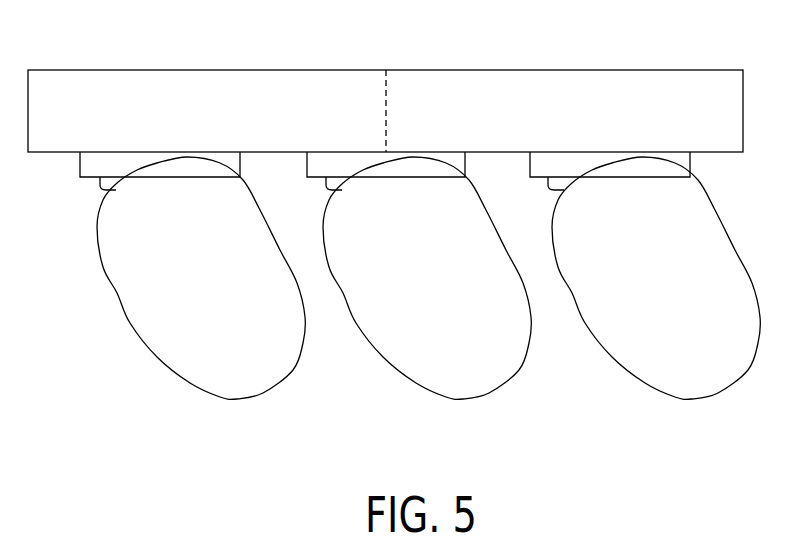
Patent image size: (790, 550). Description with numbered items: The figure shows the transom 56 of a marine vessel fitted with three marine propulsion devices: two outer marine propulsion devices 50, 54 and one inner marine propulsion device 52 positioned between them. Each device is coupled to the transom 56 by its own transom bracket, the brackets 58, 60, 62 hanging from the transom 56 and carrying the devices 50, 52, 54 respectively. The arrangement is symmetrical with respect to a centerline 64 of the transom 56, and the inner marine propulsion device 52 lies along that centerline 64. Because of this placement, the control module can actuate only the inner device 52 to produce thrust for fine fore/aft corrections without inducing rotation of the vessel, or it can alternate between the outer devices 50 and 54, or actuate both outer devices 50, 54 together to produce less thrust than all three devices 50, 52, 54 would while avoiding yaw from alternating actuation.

The outer marine propulsion device 50 is at (192, 384).
The inner marine propulsion device 52 is at (433, 395).
The outer marine propulsion device 54 is at (652, 388).
The transom 56 is at (551, 70).
The transom bracket 58 is at (113, 163).
The transom bracket 60 is at (320, 163).
The transom bracket 62 is at (558, 163).
The centerline 64 is at (392, 72).